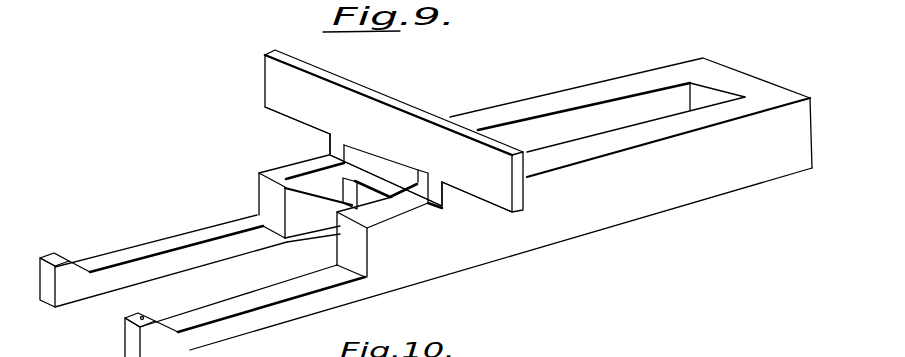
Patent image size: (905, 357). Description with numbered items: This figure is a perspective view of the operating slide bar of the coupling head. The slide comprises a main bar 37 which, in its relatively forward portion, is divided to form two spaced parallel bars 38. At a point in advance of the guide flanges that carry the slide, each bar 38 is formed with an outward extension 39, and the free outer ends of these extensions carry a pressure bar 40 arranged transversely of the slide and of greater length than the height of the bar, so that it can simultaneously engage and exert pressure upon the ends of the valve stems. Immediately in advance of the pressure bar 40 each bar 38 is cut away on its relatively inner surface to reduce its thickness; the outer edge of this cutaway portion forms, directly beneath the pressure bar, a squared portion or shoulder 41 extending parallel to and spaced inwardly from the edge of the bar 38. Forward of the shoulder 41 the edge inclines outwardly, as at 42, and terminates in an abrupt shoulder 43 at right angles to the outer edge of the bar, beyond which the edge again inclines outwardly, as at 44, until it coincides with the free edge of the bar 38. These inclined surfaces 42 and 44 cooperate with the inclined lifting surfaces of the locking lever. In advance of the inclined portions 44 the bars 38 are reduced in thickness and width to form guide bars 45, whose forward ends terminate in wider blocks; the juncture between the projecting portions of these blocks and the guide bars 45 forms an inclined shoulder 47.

The main bar 37 is at (751, 84).
The spaced parallel bars 38 is at (646, 131).
The outward extension 39 is at (326, 137).
The pressure bar 40 is at (408, 104).
The squared portion or shoulder 41 is at (405, 190).
The inclined portion 42 is at (358, 180).
The abrupt shoulder 43 is at (351, 189).
The inclined portion 44 is at (307, 192).
The guide bars 45 is at (197, 240).
The inclined shoulder 47 is at (75, 262).